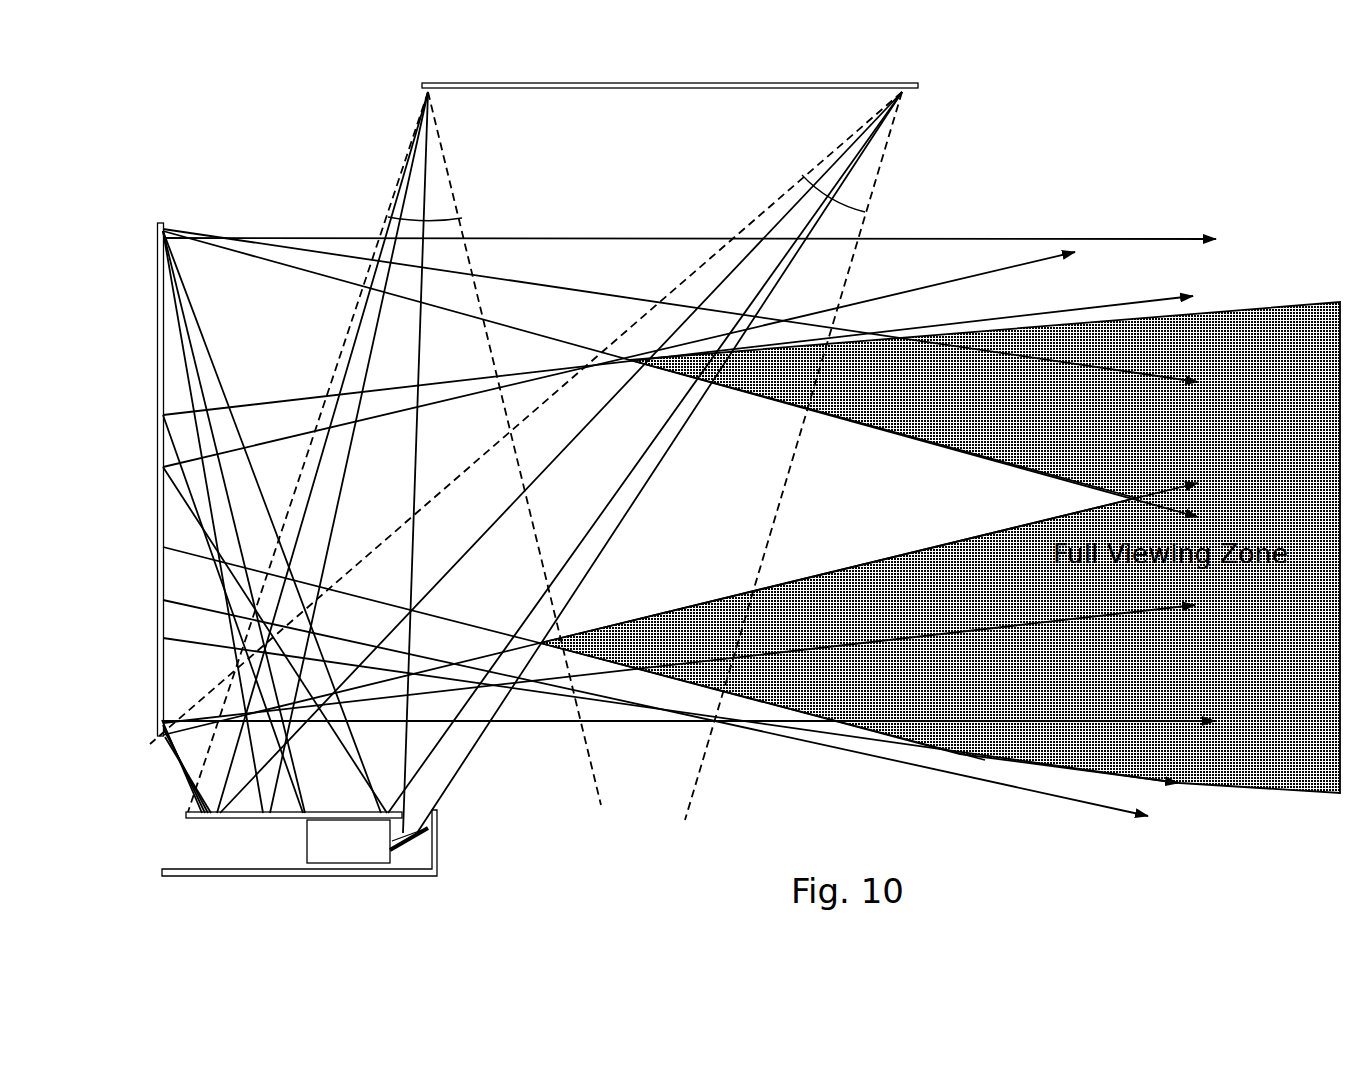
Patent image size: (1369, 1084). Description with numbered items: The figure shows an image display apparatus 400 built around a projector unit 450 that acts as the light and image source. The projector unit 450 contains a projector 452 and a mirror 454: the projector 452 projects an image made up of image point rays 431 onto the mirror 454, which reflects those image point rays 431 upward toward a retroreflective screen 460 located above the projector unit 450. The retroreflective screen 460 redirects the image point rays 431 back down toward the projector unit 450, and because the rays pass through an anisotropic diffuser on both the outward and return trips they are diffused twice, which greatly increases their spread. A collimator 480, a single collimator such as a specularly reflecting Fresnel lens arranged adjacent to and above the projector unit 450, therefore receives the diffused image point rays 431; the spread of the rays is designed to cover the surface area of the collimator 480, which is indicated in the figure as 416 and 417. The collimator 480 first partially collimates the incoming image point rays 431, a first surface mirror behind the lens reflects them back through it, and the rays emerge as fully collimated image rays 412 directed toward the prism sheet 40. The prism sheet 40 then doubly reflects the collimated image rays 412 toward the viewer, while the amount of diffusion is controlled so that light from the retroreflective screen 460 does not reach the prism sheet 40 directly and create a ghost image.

The prism sheet 40 is at (162, 316).
The image display apparatus 400 is at (1087, 133).
The collimated image rays 412 is at (160, 600).
The collimator surface area coverage 416 is at (850, 210).
The collimator surface area coverage 417 is at (435, 217).
The image point rays 431 is at (478, 733).
The projector unit 450 is at (384, 880).
The projector 452 is at (327, 841).
The mirror 454 is at (432, 855).
The retroreflective screen 460 is at (653, 89).
The collimator 480 is at (352, 813).